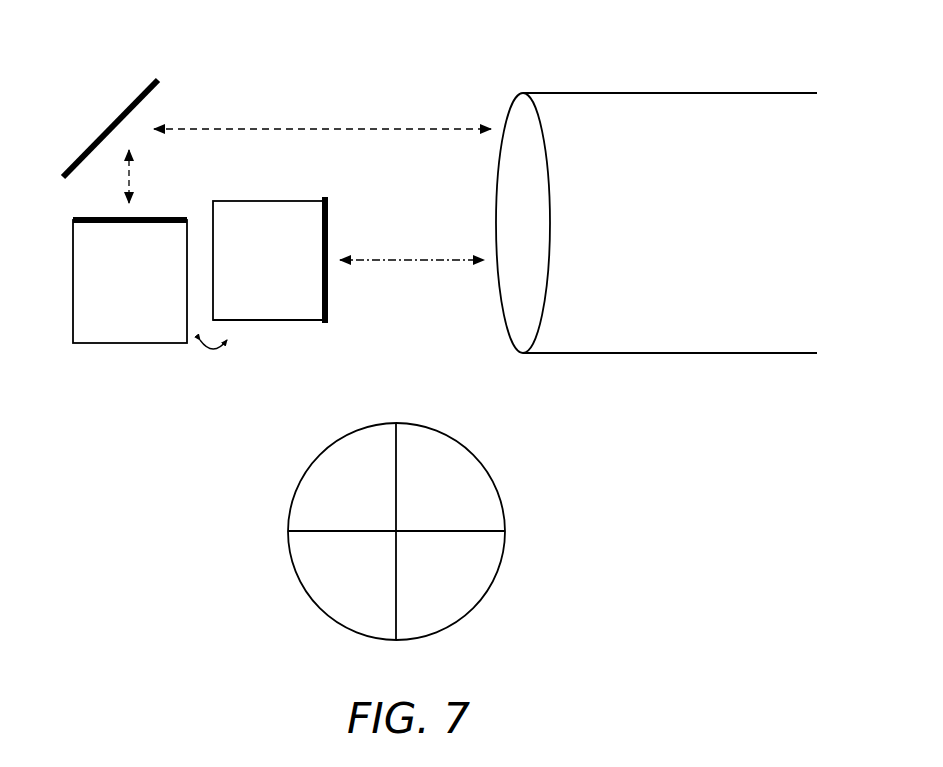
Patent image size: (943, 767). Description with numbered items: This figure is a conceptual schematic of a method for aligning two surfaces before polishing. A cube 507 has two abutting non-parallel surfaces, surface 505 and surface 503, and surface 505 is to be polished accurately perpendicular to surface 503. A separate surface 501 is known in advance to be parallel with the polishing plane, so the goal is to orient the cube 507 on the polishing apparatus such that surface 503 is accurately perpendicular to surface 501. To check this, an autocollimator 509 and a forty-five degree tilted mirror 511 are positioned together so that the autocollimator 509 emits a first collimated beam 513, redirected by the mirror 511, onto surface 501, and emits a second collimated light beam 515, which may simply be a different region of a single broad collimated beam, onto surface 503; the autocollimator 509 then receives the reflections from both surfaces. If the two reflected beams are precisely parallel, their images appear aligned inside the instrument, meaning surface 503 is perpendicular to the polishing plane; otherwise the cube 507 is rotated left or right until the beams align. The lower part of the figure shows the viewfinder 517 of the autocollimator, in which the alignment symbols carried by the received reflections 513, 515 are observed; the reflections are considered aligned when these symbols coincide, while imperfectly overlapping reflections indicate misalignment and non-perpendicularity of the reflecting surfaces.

The surface 501 is at (160, 217).
The surface 503 is at (328, 223).
The surface 505 is at (262, 200).
The cube 507 is at (285, 322).
The autocollimator 509 is at (707, 93).
The forty-five degree tilted mirror 511 is at (107, 130).
The first collimated beam 513 is at (400, 130).
The second collimated light beam 515 is at (417, 262).
The viewfinder 517 is at (523, 473).